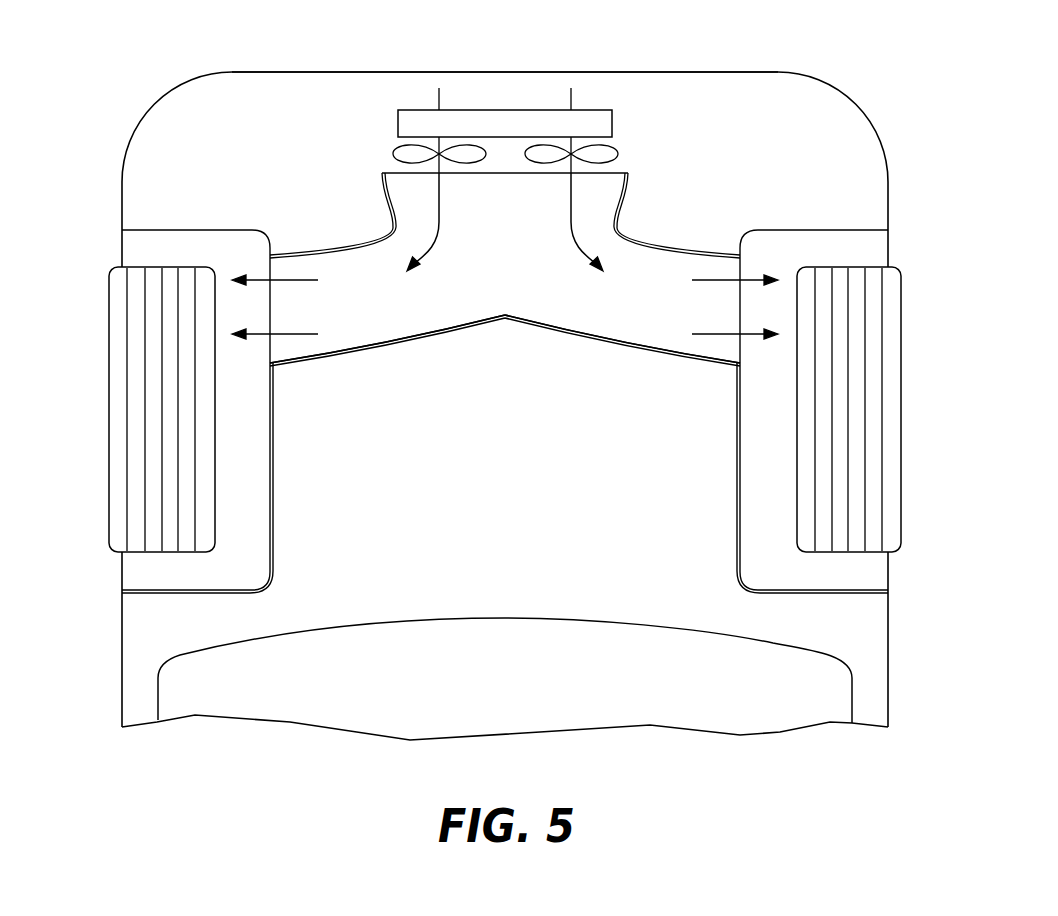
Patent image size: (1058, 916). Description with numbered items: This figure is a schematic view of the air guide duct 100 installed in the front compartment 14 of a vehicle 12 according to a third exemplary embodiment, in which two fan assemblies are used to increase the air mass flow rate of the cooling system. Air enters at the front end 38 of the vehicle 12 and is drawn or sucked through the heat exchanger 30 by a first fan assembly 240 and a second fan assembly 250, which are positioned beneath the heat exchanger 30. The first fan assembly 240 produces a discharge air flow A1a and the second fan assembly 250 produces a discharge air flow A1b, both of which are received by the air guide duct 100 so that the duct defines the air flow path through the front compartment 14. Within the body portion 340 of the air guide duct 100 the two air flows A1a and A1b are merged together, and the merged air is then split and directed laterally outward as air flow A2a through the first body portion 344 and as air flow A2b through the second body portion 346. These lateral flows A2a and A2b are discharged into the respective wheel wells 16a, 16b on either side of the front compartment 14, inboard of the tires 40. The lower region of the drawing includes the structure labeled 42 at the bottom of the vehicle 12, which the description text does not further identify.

The vehicle 12 is at (840, 60).
The front end 38 is at (339, 72).
The heat exchanger 30 is at (600, 123).
The first fan assembly 240 is at (405, 155).
The second fan assembly 250 is at (618, 155).
The air guide duct 100 is at (587, 345).
The body portion 340 is at (496, 282).
The first body portion 344 is at (378, 320).
The second body portion 346 is at (631, 327).
The front compartment 14 is at (514, 519).
The tires 40 is at (140, 342).
The wheel well 16a is at (145, 574).
The wheel well 16b is at (868, 572).
The lower bumper portion 42 is at (684, 707).
The discharge air flow A1a is at (433, 235).
The discharge air flow A1b is at (572, 228).
The air flow A2a is at (291, 281).
The air flow A2b is at (716, 281).